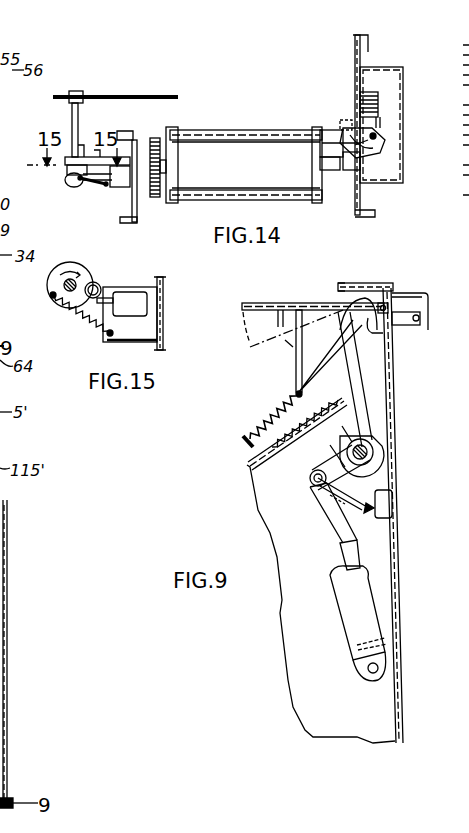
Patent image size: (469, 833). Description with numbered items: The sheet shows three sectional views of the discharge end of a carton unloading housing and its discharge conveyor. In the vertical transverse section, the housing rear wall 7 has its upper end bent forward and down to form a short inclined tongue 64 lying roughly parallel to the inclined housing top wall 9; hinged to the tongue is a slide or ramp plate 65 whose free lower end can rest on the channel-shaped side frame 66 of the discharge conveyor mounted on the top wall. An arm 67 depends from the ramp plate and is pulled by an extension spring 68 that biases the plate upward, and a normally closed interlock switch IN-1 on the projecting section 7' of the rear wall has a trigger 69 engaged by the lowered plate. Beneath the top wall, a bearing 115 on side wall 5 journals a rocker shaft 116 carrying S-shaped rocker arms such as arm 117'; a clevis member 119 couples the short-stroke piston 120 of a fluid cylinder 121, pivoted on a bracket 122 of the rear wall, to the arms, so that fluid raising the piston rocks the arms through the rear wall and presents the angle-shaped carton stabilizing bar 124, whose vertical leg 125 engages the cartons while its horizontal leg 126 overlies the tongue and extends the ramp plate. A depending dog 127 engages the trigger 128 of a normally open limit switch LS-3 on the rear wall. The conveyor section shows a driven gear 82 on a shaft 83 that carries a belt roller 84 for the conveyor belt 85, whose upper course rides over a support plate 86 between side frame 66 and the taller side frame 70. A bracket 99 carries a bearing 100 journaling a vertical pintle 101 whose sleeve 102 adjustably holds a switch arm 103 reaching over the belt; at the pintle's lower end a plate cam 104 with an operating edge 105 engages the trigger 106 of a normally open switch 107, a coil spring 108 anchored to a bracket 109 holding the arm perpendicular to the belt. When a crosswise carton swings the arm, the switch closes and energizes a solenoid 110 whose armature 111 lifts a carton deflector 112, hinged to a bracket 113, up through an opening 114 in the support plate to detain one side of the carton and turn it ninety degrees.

In FIG. 9, the housing side wall 5 is at (283, 612).
In FIG. 9, the housing rear wall 7 is at (406, 515).
In FIG. 9, the projecting section of rear wall 7' is at (403, 367).
In FIG. 9, the housing top wall 9 is at (246, 466).
In FIG. 9, the inclined tongue 64 is at (343, 289).
In FIG. 9, the ramp plate 65 is at (257, 303).
In FIG. 14, the side frame 66 is at (131, 216).
In FIG. 15, the side frame 66 is at (164, 283).
In FIG. 9, the arm 67 is at (295, 368).
In FIG. 9, the extension spring 68 is at (246, 440).
In FIG. 9, the trigger 69 is at (297, 399).
In FIG. 14, the side frame 70 is at (370, 211).
In FIG. 14, the driven gear 82 is at (154, 198).
In FIG. 14, the shaft 83 is at (333, 172).
In FIG. 14, the belt roller 84 is at (280, 160).
In FIG. 14, the conveyor belt 85 is at (250, 130).
In FIG. 14, the support plate 86 is at (167, 128).
In FIG. 14, the bracket 99 is at (97, 155).
In FIG. 14, the bearing 100 is at (81, 150).
In FIG. 14, the pintle 101 is at (72, 114).
In FIG. 15, the pintle 101 is at (64, 264).
In FIG. 14, the sleeve 102 is at (77, 91).
In FIG. 14, the switch arm 103 is at (150, 95).
In FIG. 14, the plate cam 104 is at (72, 186).
In FIG. 15, the plate cam 104 is at (47, 287).
In FIG. 15, the operating edge 105 is at (96, 282).
In FIG. 15, the trigger 106 is at (102, 288).
In FIG. 14, the switch 107 is at (118, 188).
In FIG. 15, the switch 107 is at (135, 303).
In FIG. 14, the coil spring 108 is at (86, 188).
In FIG. 15, the coil spring 108 is at (84, 336).
In FIG. 15, the bracket 109 is at (128, 341).
In FIG. 14, the solenoid 110 is at (378, 102).
In FIG. 14, the armature 111 is at (375, 118).
In FIG. 14, the carton deflector 112 is at (368, 146).
In FIG. 14, the bracket 113 is at (385, 133).
In FIG. 14, the opening 114 is at (340, 128).
In FIG. 9, the bearing 115 is at (373, 449).
In FIG. 9, the rocker shaft 116 is at (378, 446).
In FIG. 9, the rocker arm 117' is at (377, 372).
In FIG. 9, the clevis member 119 is at (323, 510).
In FIG. 9, the piston 120 is at (343, 566).
In FIG. 9, the fluid cylinder 121 is at (355, 620).
In FIG. 9, the bracket 122 is at (372, 681).
In FIG. 9, the carton stabilizing bar 124 is at (389, 290).
In FIG. 9, the vertical leg 125 is at (396, 297).
In FIG. 9, the horizontal leg 126 is at (364, 283).
In FIG. 9, the depending dog 127 is at (352, 508).
In FIG. 9, the trigger 128 is at (380, 490).
In FIG. 9, the interlock switch IN-1 is at (385, 335).
In FIG. 9, the limit switch LS-3 is at (393, 502).